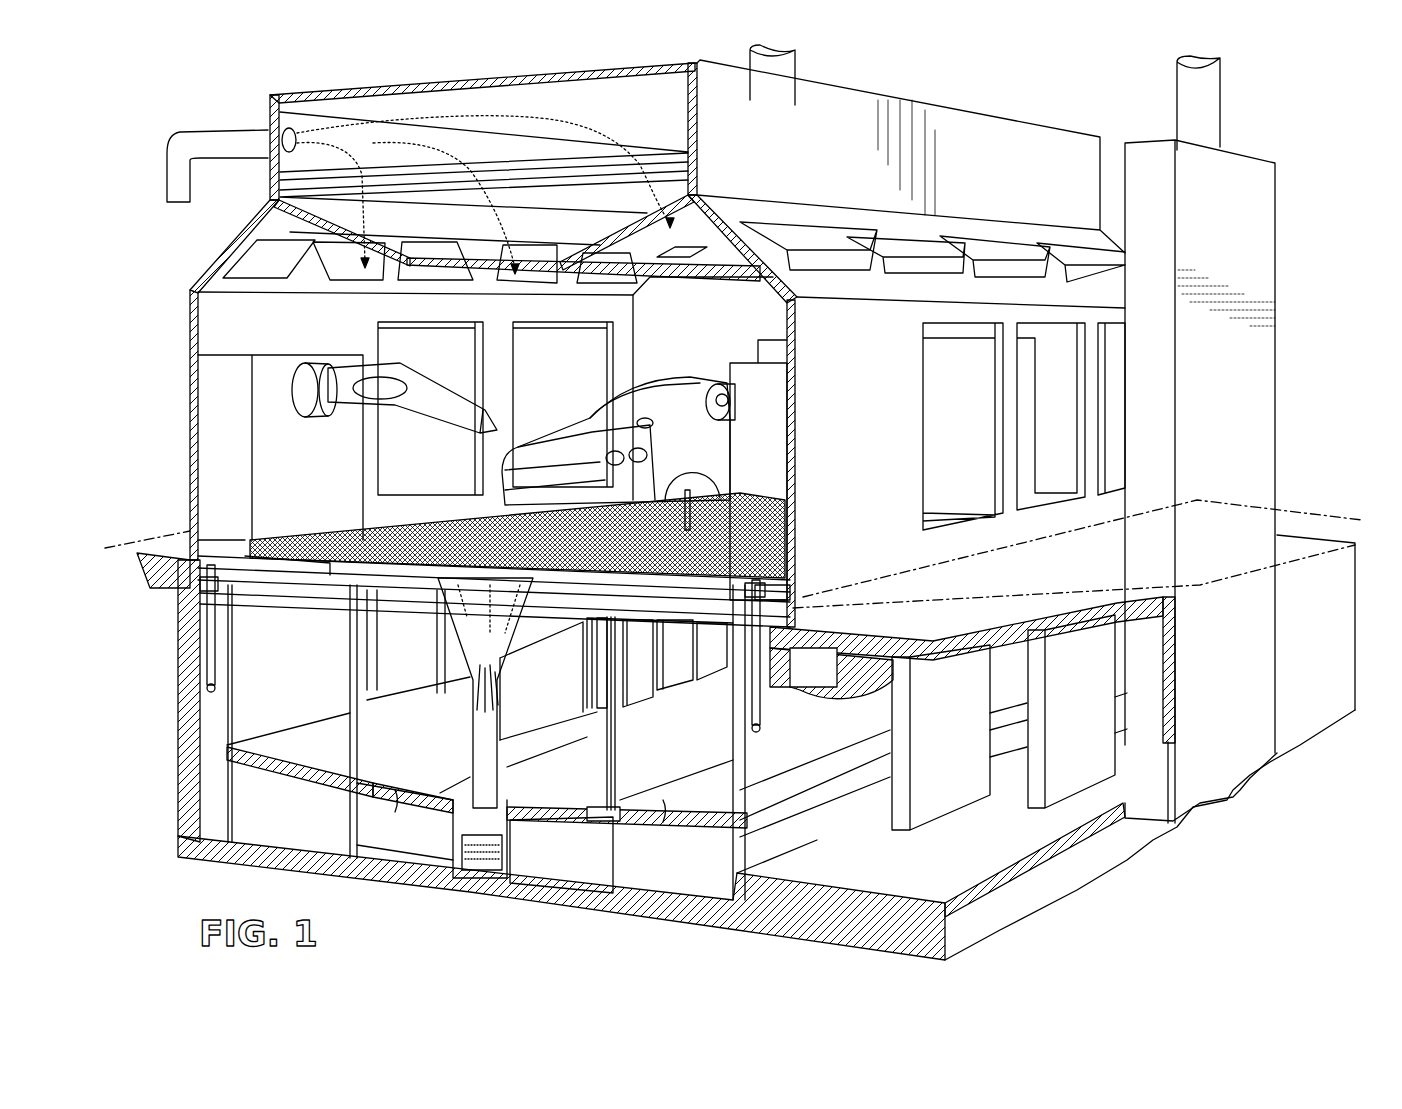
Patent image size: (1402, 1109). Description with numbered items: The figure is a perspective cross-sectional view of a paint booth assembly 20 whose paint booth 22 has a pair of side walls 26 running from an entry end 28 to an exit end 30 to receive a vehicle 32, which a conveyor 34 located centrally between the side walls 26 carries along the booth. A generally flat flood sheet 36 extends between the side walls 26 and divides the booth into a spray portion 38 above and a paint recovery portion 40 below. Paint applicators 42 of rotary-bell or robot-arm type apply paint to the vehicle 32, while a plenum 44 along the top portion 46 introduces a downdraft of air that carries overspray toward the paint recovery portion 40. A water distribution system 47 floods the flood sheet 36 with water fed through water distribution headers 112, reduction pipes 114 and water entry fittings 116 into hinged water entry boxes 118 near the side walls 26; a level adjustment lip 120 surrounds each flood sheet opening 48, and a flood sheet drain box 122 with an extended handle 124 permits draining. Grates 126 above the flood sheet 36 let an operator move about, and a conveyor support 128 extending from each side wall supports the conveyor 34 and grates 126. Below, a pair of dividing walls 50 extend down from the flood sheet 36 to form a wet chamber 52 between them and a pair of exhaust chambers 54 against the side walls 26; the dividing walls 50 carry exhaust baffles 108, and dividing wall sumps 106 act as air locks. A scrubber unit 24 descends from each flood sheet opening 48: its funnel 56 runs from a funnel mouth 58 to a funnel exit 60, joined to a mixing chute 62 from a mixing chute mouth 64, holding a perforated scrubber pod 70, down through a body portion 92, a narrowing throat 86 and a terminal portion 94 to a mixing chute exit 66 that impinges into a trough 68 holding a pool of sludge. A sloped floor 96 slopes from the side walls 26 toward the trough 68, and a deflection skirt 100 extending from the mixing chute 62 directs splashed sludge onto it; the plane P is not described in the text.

The paint booth assembly 20 is at (240, 78).
The paint booth 22 is at (190, 307).
The scrubber unit 24 is at (560, 677).
The side walls 26 is at (188, 458).
The entry end 28 is at (1100, 165).
The exit end 30 is at (188, 390).
The vehicle 32 is at (667, 397).
The conveyor 34 is at (760, 575).
The flood sheet 36 is at (243, 567).
The spray portion 38 is at (699, 326).
The paint recovery portion 40 is at (347, 741).
The paint applicators 42 is at (453, 400).
The plenum 44 is at (312, 120).
The top portion 46 is at (590, 72).
The water distribution system 47 is at (167, 567).
The flood sheet openings 48 is at (443, 507).
The dividing walls 50 is at (373, 778).
The wet chamber 52 is at (443, 784).
The exhaust chambers 54 is at (283, 659).
The funnel 56 is at (550, 620).
The funnel mouth 58 is at (470, 575).
The funnel exit 60 is at (593, 685).
The mixing chute 62 is at (470, 677).
The mixing chute mouth 64 is at (597, 685).
The mixing chute exit 66 is at (497, 878).
The trough 68 is at (470, 867).
The scrubber pod 70 is at (550, 737).
The throat 86 is at (530, 753).
The body portion 92 is at (470, 727).
The terminal portion 94 is at (460, 823).
The sloped floor 96 is at (397, 777).
The deflection skirt 100 is at (567, 807).
The dividing wall sumps 106 is at (347, 773).
The exhaust baffles 108 is at (363, 635).
The water distribution headers 112 is at (210, 688).
The reduction pipes 114 is at (210, 637).
The water entry fittings 116 is at (200, 586).
The water entry boxes 118 is at (195, 545).
The level adjustment lip 120 is at (357, 565).
The flood sheet drain box 122 is at (690, 507).
The extended handle 124 is at (520, 580).
The grates 126 is at (770, 585).
The conveyor support 128 is at (325, 570).
The plane P is at (1200, 585).